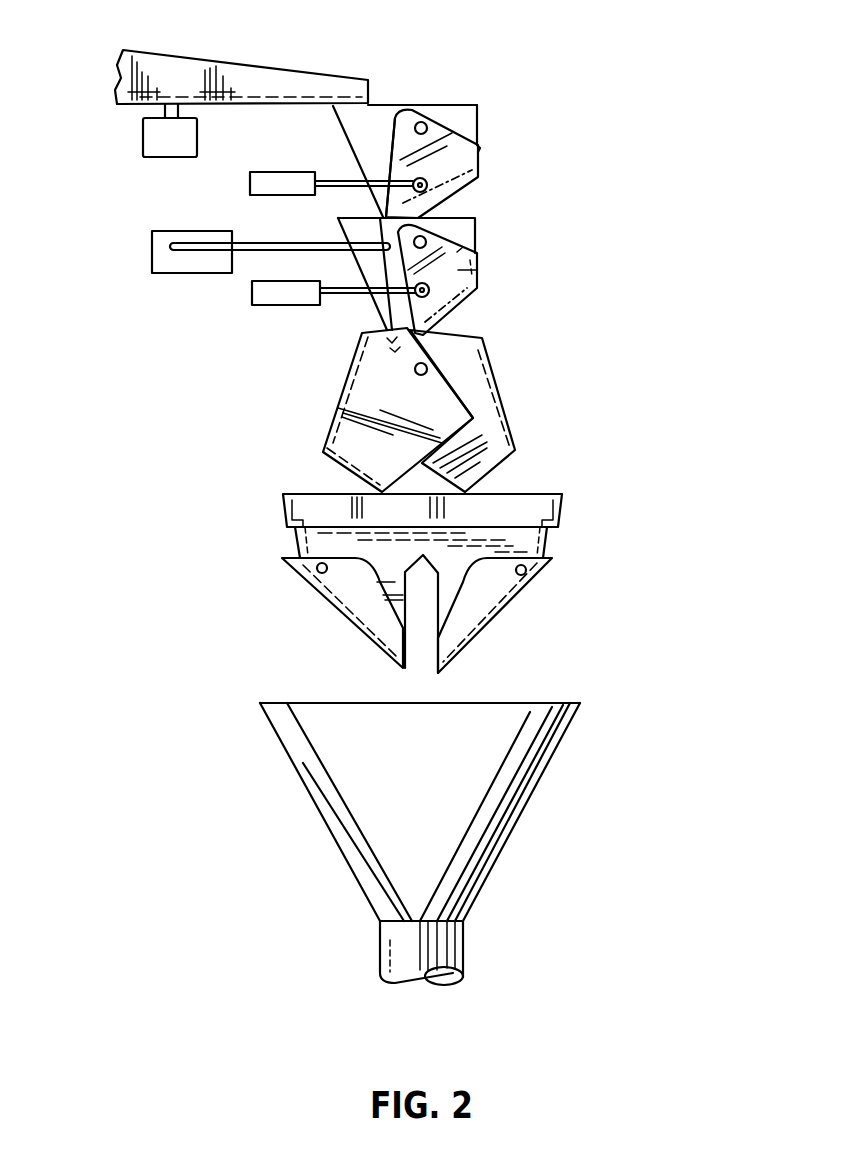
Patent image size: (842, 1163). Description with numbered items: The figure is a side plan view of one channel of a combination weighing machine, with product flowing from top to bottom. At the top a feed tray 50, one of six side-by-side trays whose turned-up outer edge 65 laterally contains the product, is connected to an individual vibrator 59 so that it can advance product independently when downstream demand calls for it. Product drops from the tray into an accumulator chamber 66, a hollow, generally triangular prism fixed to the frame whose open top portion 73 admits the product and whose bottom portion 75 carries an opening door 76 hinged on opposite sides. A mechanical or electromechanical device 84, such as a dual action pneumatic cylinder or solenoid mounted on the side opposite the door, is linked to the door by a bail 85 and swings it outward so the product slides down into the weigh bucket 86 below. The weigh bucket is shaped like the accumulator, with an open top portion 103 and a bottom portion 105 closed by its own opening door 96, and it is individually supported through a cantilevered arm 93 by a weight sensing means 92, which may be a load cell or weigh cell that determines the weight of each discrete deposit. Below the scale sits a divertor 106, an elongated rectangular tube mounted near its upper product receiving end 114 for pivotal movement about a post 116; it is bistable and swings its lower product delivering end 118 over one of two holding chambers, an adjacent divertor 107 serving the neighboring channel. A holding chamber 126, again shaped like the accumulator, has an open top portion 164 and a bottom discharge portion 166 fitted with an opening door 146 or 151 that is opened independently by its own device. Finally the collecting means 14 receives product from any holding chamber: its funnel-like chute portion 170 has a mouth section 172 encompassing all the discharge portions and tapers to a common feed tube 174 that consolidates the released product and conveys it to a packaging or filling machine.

The collecting means 14 is at (555, 758).
The feed tray 50 is at (250, 63).
The vibrator 59 is at (155, 133).
The outer edge 65 is at (295, 82).
The accumulator chamber 66 is at (463, 118).
The top portion 73 is at (457, 103).
The bottom portion 75 is at (357, 211).
The opening door 76 is at (458, 155).
The mechanical or electromechanical device 84 is at (257, 180).
The bail 85 is at (330, 178).
The weigh bucket 86 is at (475, 227).
The weight sensing means 92 is at (158, 260).
The cantilevered arm 93 is at (262, 250).
The opening door 96 is at (458, 271).
The open top portion 103 is at (468, 212).
The bottom portion 105 is at (370, 308).
The divertor 106 is at (453, 375).
The divertor 107 is at (482, 398).
The upper product receiving end 114 is at (360, 343).
The post 116 is at (414, 371).
The lower product delivering end 118 is at (323, 447).
The holding chamber 126 is at (538, 498).
The opening door 146 is at (490, 607).
The opening door 151 is at (352, 592).
The open top portion 164 is at (563, 508).
The bottom discharge portion 166 is at (472, 657).
The funnel-like chute portion 170 is at (503, 807).
The mouth section 172 is at (533, 713).
The common feed tube 174 is at (463, 945).